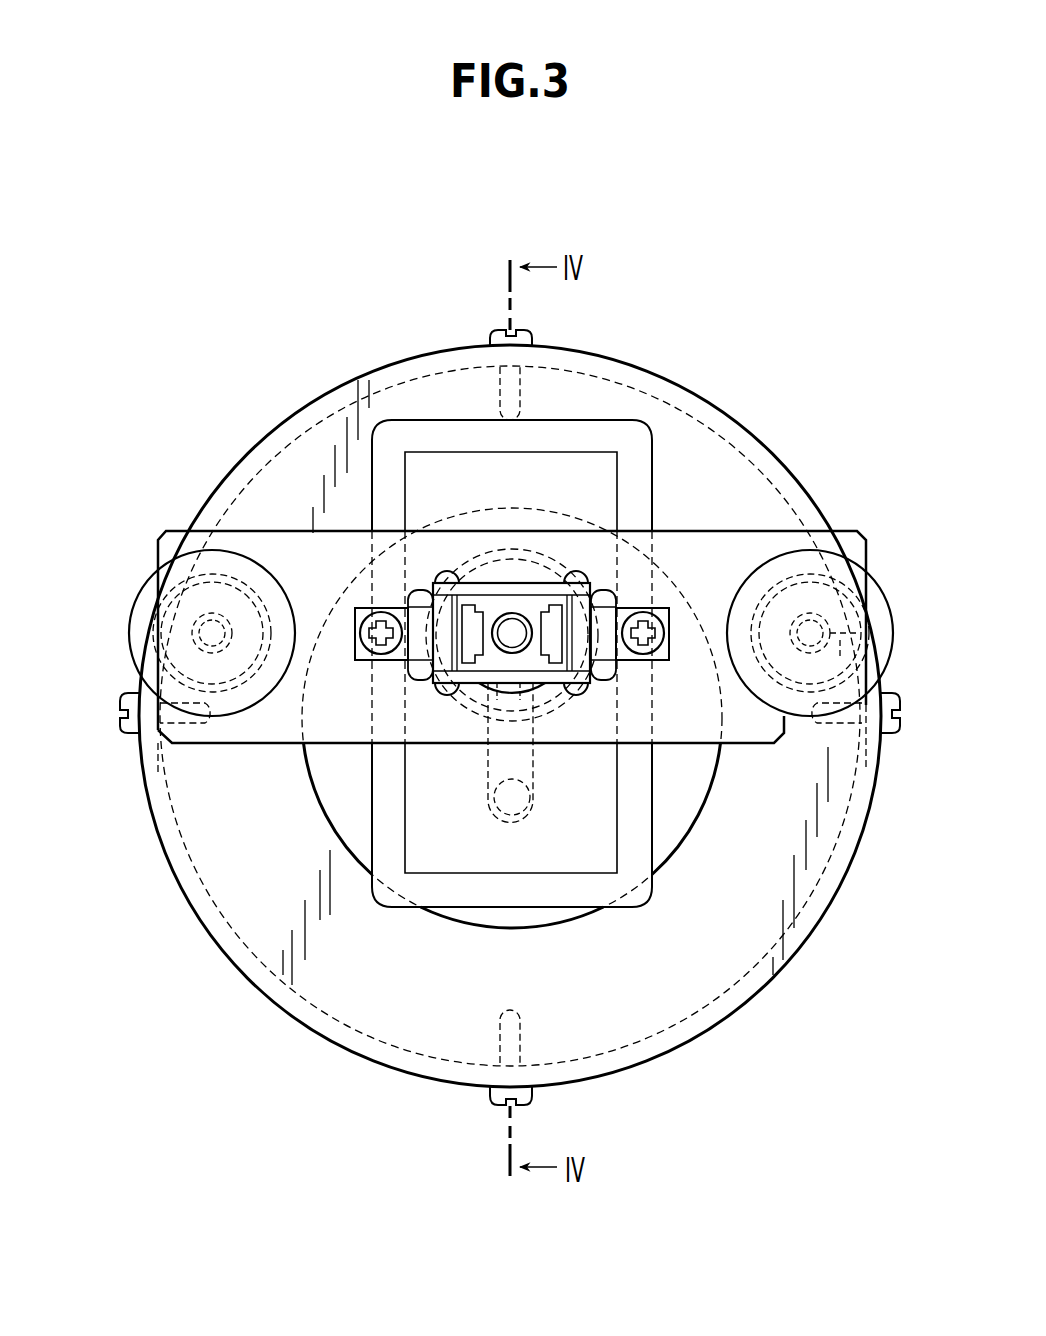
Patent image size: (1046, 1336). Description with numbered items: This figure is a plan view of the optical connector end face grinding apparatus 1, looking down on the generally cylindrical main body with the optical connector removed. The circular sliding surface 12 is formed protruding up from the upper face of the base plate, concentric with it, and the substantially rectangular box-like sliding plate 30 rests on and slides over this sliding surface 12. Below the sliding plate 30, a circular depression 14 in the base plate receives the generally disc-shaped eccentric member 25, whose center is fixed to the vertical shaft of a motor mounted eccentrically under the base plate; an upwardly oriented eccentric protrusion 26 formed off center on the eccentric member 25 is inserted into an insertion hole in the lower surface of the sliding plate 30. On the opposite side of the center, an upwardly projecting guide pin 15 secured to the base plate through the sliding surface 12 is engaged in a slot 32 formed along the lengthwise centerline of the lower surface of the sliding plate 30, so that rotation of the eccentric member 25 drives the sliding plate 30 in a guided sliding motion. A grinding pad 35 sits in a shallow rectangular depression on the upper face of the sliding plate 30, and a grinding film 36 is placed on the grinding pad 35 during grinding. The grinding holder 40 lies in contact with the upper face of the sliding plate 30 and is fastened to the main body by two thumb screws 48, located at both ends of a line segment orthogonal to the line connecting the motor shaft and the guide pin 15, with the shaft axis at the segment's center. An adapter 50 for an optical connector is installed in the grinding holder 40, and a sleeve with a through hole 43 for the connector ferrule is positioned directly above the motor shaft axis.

The optical connector end face grinding apparatus 1 is at (733, 225).
The sliding surface 12 is at (690, 783).
The circular depression 14 is at (557, 718).
The guide pin 15 is at (524, 793).
The eccentric member 25 is at (548, 553).
The eccentric protrusion 26 is at (524, 548).
The sliding plate 30 is at (410, 414).
The slot 32 is at (503, 753).
The grinding pad 35 is at (512, 747).
The grinding film 36 is at (558, 848).
The grinding holder 40 is at (247, 527).
The through hole 43 is at (500, 624).
The thumb screws 48 is at (137, 607).
The adapter 50 is at (598, 579).